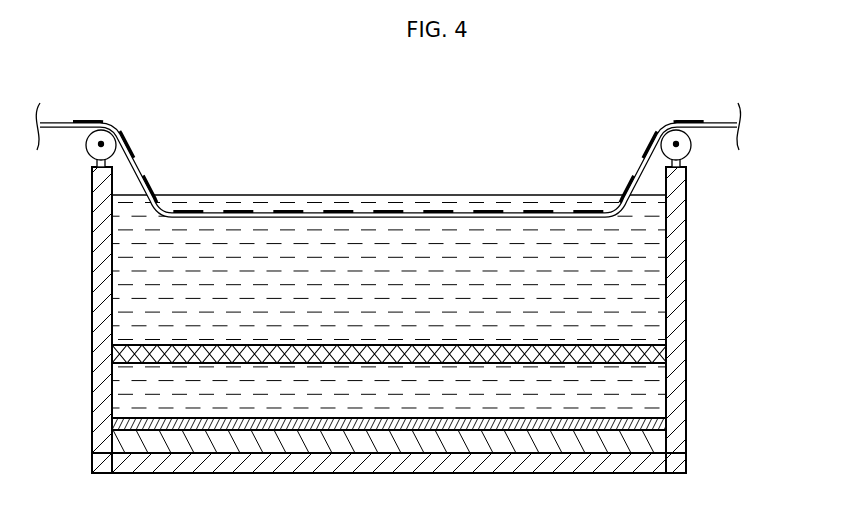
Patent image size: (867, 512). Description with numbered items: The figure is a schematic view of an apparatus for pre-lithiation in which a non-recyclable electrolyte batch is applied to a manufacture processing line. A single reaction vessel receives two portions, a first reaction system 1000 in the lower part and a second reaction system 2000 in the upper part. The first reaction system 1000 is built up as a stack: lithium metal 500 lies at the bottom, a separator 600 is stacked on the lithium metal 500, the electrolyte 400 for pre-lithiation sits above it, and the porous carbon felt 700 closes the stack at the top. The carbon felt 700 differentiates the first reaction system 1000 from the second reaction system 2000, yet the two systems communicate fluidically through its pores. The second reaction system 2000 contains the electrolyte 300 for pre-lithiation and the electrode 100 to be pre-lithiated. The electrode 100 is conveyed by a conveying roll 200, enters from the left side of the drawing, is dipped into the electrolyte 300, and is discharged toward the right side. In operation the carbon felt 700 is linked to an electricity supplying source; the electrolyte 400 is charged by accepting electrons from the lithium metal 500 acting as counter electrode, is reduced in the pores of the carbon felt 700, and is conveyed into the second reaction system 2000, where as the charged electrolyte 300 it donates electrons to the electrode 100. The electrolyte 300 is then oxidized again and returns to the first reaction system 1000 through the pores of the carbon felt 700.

The electrode to be pre-lithiated 100 is at (630, 180).
The conveying roll 200 is at (667, 125).
The electrolyte for pre-lithiation 300 is at (650, 316).
The electrolyte for pre-lithiation 400 is at (652, 394).
The lithium metal 500 is at (426, 447).
The separator 600 is at (655, 427).
The carbon felt 700 is at (652, 353).
The Reaction System 1 1000 is at (470, 406).
The Reaction System 2 2000 is at (442, 288).